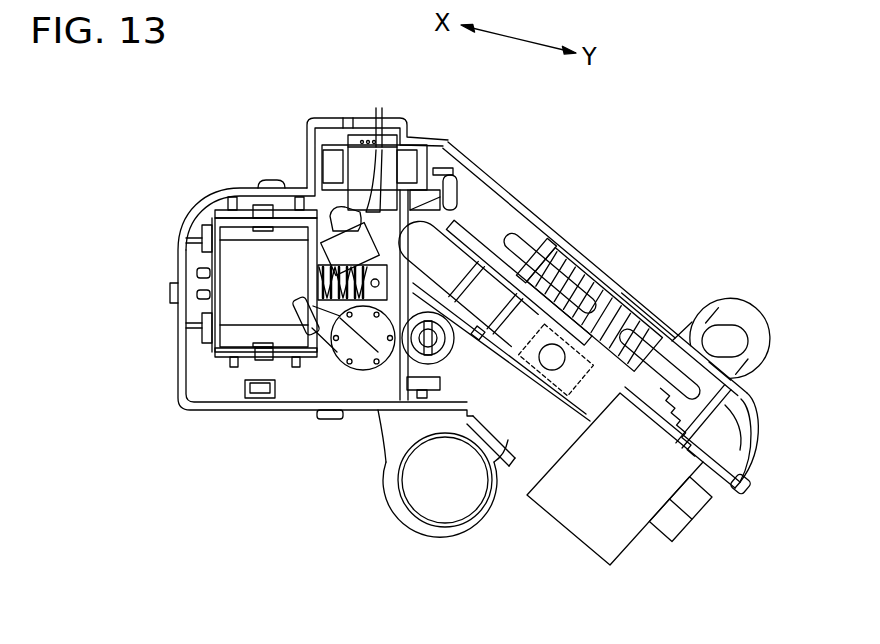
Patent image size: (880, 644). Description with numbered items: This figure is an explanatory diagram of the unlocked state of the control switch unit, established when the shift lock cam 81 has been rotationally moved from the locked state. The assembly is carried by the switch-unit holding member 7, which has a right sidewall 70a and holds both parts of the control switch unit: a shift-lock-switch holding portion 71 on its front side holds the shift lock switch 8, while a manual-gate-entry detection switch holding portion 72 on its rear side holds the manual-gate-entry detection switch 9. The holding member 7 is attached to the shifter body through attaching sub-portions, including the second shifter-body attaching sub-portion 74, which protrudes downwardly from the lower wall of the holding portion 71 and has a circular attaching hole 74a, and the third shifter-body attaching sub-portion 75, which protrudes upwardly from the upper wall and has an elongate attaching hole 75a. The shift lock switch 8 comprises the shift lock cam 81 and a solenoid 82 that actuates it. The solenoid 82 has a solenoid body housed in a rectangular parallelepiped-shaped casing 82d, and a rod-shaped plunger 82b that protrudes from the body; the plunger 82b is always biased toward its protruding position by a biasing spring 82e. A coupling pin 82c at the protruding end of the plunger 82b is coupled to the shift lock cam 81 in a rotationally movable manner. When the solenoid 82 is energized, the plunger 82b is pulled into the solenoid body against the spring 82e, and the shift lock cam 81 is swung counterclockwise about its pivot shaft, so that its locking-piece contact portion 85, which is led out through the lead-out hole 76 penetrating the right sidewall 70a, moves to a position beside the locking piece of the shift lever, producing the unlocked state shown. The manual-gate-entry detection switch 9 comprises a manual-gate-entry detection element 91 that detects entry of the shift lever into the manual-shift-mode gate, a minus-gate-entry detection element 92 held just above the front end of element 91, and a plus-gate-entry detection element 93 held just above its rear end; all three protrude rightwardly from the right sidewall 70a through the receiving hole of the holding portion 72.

The switch-unit holding member 7 is at (510, 224).
The shift lock switch 8 is at (243, 196).
The manual-gate-entry detection switch 9 is at (624, 277).
The right sidewall 70a is at (512, 222).
The shift-lock-switch holding portion 71 is at (288, 203).
The manual-gate-entry detection switch holding portion 72 is at (657, 355).
The second shifter-body attaching sub-portion 74 is at (492, 522).
The circular attaching hole 74a is at (433, 497).
The third shifter-body attaching sub-portion 75 is at (737, 310).
The elongate attaching hole 75a is at (733, 343).
The lead-out hole 76 is at (386, 145).
The shift lock cam 81 is at (370, 250).
The solenoid 82 is at (242, 252).
The plunger 82b is at (374, 300).
The coupling pin 82c is at (348, 333).
The casing 82d is at (207, 274).
The biasing spring 82e is at (317, 312).
The locking-piece contact portion 85 is at (345, 240).
The manual-gate-entry detection element 91 is at (597, 262).
The minus-gate-entry detection element 92 is at (573, 240).
The plus-gate-entry detection element 93 is at (640, 305).